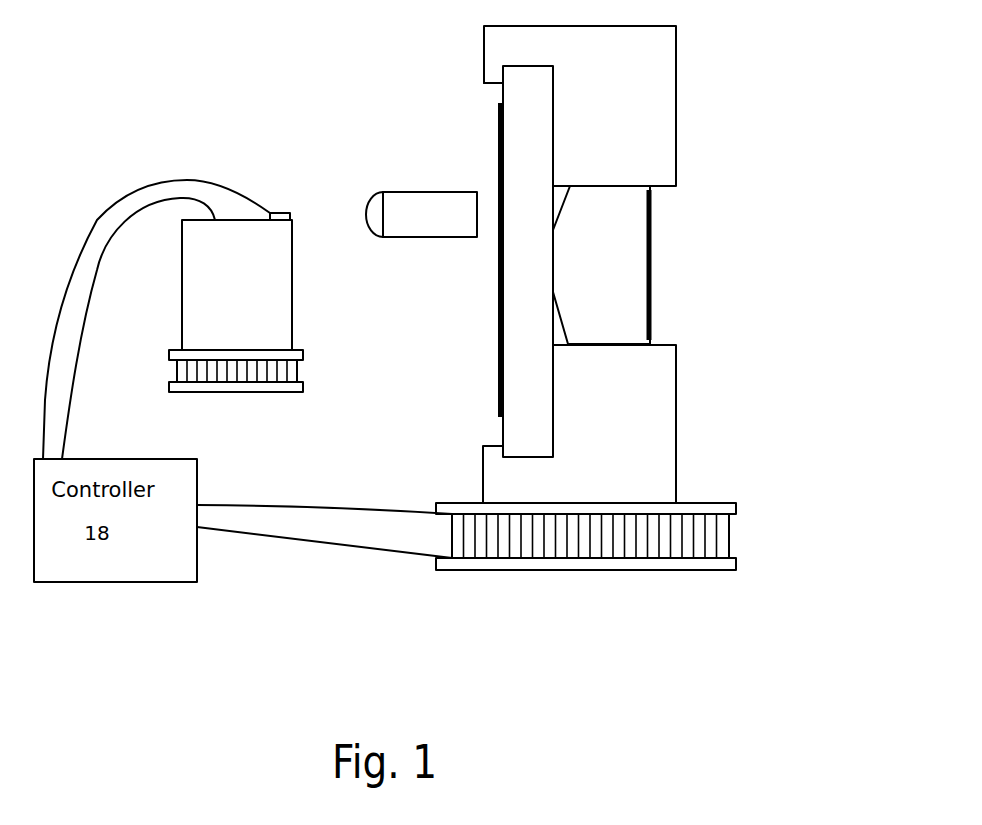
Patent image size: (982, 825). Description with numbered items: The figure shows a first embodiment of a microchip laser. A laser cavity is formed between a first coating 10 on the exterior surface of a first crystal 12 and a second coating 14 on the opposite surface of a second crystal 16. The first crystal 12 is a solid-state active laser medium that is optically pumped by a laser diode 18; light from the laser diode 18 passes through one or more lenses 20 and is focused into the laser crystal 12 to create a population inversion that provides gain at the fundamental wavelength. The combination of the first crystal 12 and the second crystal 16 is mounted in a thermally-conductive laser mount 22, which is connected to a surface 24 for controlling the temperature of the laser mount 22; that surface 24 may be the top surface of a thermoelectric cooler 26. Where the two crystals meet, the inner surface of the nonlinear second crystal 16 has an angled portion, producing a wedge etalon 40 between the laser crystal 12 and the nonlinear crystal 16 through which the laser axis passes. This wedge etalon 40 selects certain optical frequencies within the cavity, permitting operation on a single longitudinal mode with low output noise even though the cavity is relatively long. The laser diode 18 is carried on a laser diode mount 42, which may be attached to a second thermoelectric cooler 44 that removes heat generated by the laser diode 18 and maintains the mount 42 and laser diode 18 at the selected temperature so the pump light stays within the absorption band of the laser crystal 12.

The first coating 10 is at (500, 158).
The first crystal 12 is at (517, 117).
The second coating 14 is at (652, 294).
The second crystal 16 is at (625, 206).
The laser diode 18 is at (279, 212).
The lenses 20 is at (425, 230).
The laser mount 22 is at (652, 82).
The surface 24 is at (708, 498).
The thermoelectric cooler 26 is at (710, 541).
The wedge etalon 40 is at (557, 335).
The laser diode mount 42 is at (220, 278).
The second thermoelectric cooler 44 is at (237, 388).